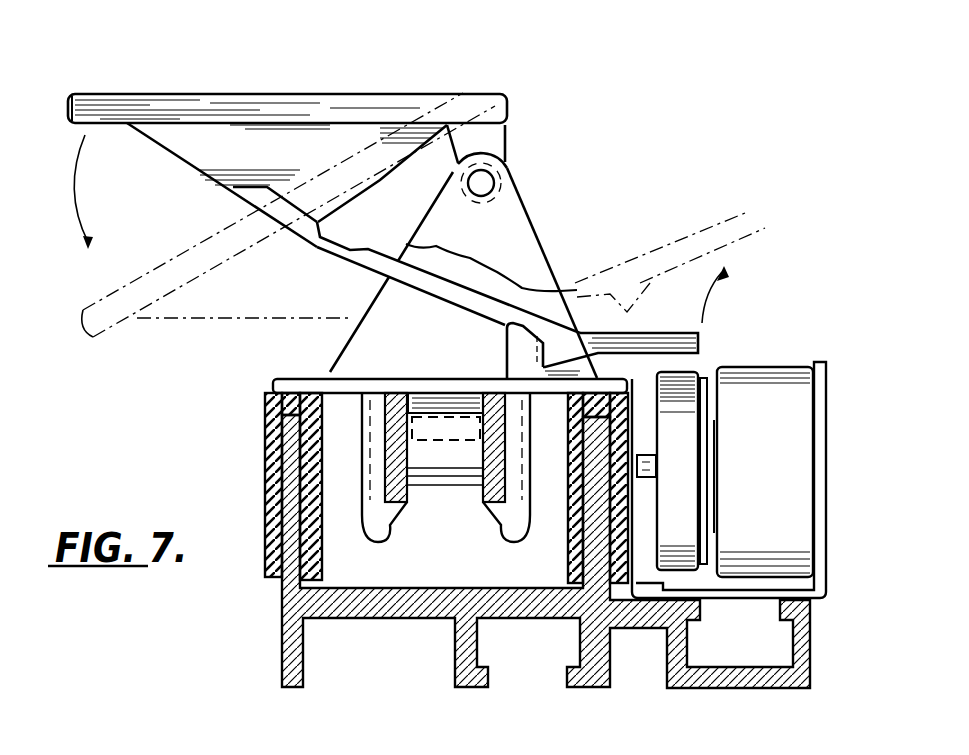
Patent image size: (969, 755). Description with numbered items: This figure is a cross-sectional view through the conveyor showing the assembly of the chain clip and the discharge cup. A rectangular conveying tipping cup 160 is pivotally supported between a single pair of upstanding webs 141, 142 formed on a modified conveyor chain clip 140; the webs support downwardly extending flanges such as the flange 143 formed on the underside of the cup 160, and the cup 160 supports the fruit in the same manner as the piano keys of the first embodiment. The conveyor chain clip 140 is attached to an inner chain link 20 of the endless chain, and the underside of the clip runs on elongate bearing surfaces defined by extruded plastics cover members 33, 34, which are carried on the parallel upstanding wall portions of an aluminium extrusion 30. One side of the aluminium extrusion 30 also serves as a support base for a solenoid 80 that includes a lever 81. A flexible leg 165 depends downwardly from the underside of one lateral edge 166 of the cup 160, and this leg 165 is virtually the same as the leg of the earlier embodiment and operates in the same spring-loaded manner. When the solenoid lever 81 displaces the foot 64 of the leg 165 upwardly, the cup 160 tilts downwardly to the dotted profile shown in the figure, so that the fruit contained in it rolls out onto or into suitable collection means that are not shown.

The lateral edge 166 is at (87, 100).
The tipping cup 160 is at (247, 107).
The downwardly extending flange 143 is at (482, 148).
The upstanding web 141 is at (510, 222).
The flexible leg 165 is at (318, 248).
The conveyor chain clip 140 is at (343, 336).
The upstanding web 142 is at (470, 366).
The foot 64 is at (700, 341).
The cover member 33 is at (265, 445).
The cover member 34 is at (575, 510).
The chain link 20 is at (440, 460).
The aluminium extrusion 30 is at (392, 620).
The lever 81 is at (687, 458).
The solenoid 80 is at (788, 507).